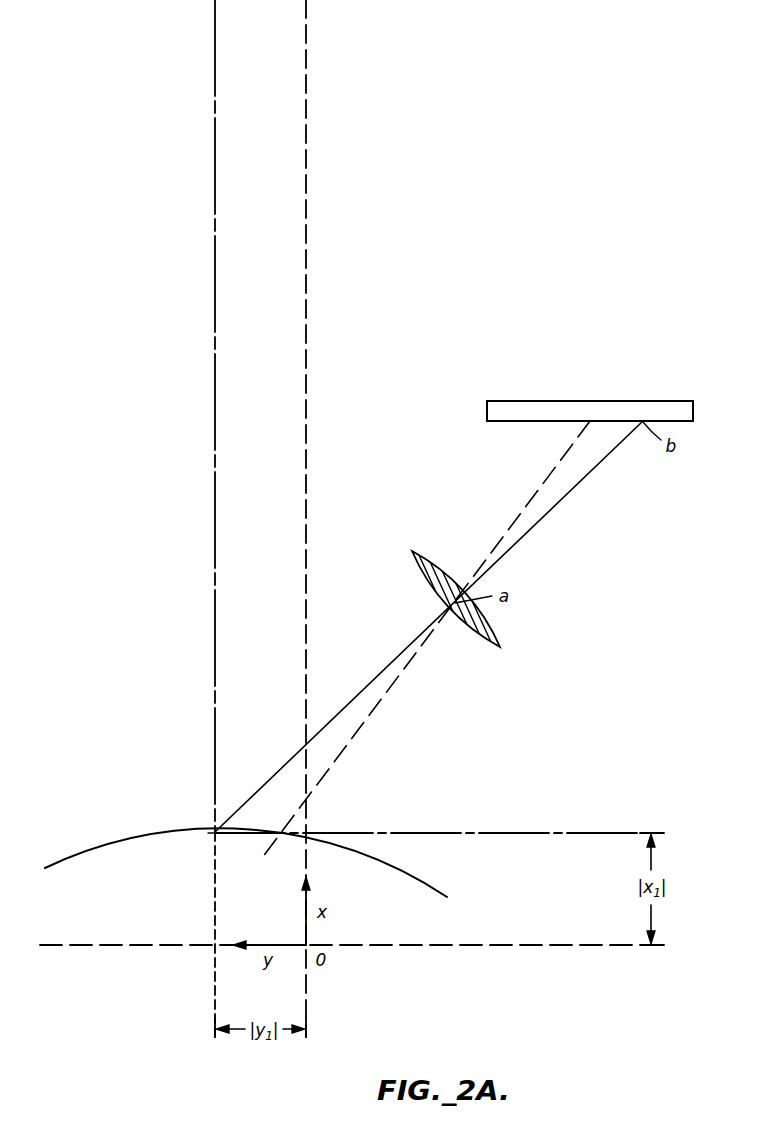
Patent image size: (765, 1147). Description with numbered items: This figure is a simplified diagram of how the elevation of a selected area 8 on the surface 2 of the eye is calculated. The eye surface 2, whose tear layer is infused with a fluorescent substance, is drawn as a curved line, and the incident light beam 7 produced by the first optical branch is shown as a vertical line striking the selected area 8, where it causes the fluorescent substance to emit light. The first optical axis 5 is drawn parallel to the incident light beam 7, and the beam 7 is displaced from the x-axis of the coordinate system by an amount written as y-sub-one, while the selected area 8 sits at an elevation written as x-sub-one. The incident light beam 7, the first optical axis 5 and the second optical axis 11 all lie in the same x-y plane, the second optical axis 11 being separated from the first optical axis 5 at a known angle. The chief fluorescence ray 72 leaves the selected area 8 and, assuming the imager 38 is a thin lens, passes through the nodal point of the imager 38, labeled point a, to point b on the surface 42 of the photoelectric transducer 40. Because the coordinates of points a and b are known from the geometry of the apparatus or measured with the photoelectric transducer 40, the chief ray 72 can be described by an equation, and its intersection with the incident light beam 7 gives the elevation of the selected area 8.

The eye surface 2 is at (73, 857).
The first optical axis 5 is at (307, 240).
The incident light beam 7 is at (216, 235).
The selected area 8 is at (213, 832).
The second optical axis 11 is at (396, 678).
The imager 38 is at (501, 636).
The photoelectric transducer 40 is at (559, 401).
The transducer surface 42 is at (517, 422).
The chief fluorescence ray 72 is at (382, 670).